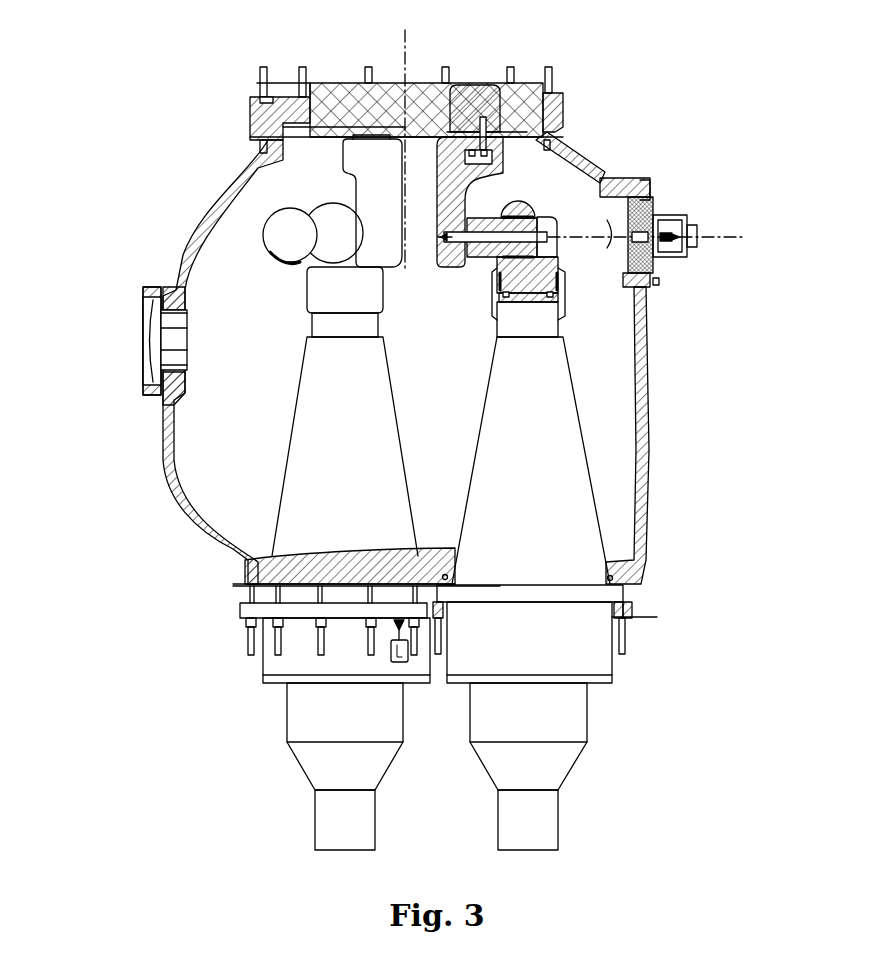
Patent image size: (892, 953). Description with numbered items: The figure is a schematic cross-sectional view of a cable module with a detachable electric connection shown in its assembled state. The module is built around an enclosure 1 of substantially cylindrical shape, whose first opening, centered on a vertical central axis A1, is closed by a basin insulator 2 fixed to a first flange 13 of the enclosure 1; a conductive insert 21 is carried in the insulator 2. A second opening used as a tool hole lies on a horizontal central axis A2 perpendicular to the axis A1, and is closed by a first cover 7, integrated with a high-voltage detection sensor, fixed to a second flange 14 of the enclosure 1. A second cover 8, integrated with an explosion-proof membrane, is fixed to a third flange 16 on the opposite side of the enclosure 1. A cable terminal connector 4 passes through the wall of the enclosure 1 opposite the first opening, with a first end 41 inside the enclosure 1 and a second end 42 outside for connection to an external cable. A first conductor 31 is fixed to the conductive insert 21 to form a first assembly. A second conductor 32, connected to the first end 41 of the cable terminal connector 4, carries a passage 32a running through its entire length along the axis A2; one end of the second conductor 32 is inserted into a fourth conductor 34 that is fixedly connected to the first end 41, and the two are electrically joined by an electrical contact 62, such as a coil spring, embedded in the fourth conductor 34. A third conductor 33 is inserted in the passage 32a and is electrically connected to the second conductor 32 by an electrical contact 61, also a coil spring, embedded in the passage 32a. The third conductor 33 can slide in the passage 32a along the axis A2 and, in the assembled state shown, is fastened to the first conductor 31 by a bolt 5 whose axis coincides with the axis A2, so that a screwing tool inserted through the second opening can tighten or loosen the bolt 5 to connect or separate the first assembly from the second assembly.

The enclosure 1 is at (170, 457).
The insulator 2 is at (347, 92).
The cable terminal connector 4 is at (557, 497).
The bolt 5 is at (543, 233).
The first cover 7 is at (697, 244).
The second cover 8 is at (170, 292).
The first flange 13 is at (253, 130).
The second flange 14 is at (643, 182).
The third flange 16 is at (150, 322).
The conductive insert 21 is at (472, 97).
The first conductor 31 is at (442, 188).
The second conductor 32 is at (540, 263).
The passage 32a is at (553, 233).
The third conductor 33 is at (480, 220).
The fourth conductor 34 is at (563, 303).
The first end 41 is at (545, 320).
The second end 42 is at (545, 814).
The electrical contact 61 is at (520, 215).
The electrical contact 62 is at (563, 290).
The central axis of the first opening A1 is at (407, 52).
The central axis of the second opening A2 is at (718, 237).